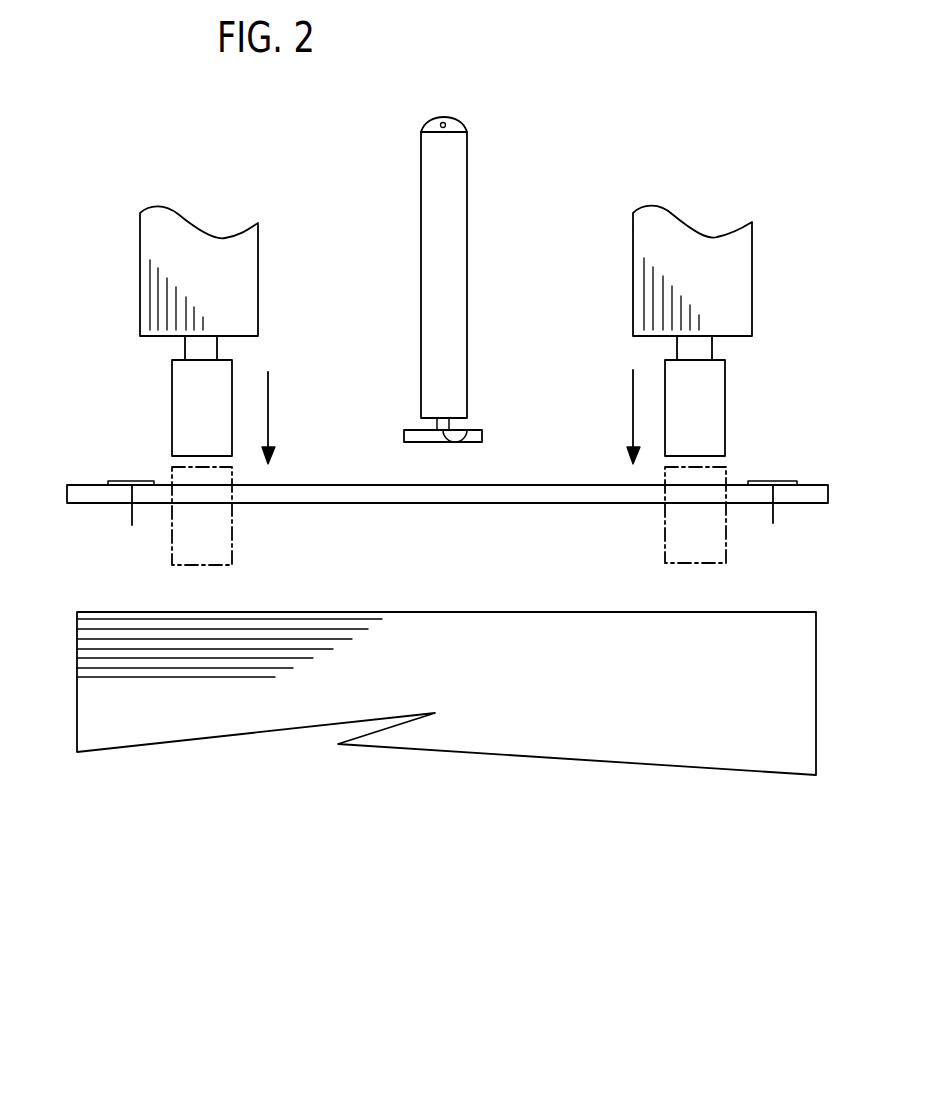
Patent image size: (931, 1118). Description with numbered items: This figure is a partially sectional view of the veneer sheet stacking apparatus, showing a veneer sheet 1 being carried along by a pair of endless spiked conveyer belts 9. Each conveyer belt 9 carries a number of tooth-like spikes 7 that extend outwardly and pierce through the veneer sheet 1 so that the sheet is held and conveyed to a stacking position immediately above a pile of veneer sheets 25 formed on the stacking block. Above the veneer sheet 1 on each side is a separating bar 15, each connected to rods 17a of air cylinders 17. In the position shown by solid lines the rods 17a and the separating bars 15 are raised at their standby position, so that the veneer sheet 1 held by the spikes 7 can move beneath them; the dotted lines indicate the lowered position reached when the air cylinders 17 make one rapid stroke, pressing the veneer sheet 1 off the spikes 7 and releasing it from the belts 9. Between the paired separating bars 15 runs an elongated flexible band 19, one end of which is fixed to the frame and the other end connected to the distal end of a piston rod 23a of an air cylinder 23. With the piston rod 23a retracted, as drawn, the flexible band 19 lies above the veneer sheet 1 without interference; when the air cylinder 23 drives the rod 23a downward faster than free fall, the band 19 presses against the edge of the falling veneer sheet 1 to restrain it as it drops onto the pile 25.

The veneer sheet 1 is at (360, 493).
The spikes 7 is at (132, 510).
The endless spiked conveyer belt 9 is at (138, 481).
The separating bar 15 is at (200, 421).
The air cylinder 17 is at (235, 288).
The rod 17a is at (195, 348).
The elongated flexible band 19 is at (422, 436).
The air cylinder 23 is at (442, 210).
The piston rod 23a is at (470, 428).
The pile of veneer sheets 25 is at (627, 643).